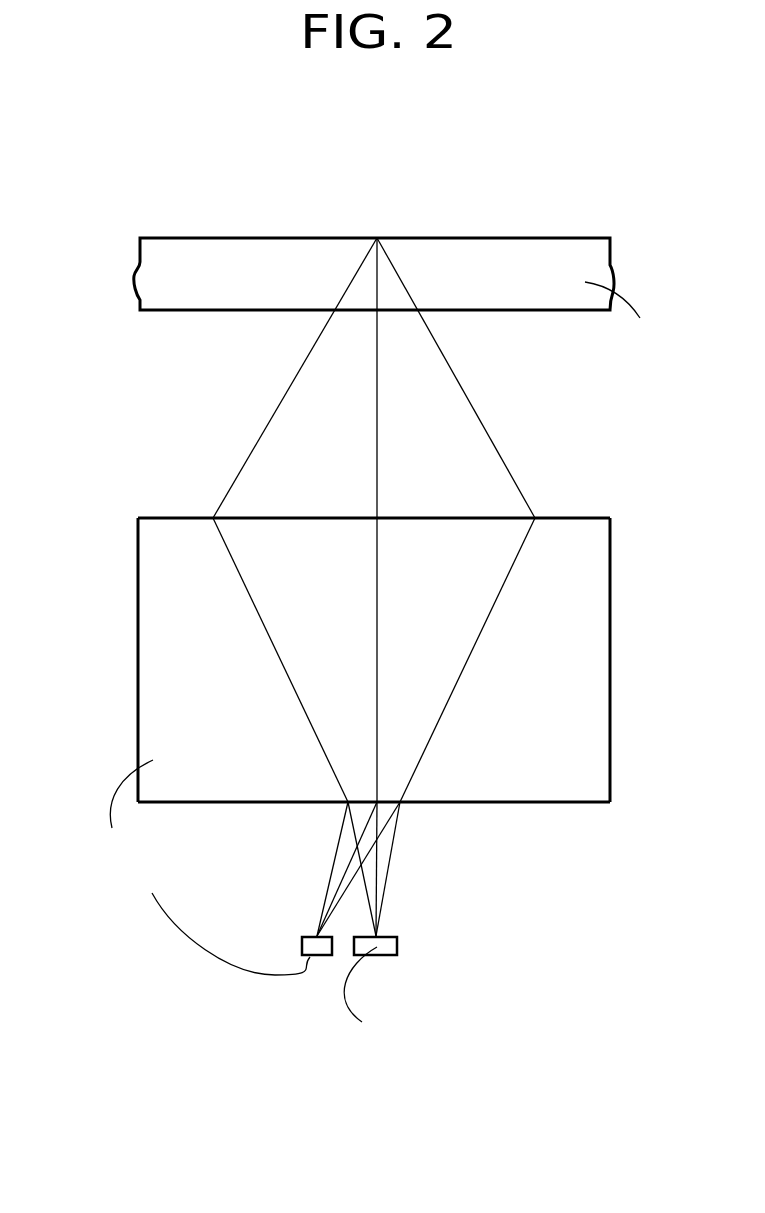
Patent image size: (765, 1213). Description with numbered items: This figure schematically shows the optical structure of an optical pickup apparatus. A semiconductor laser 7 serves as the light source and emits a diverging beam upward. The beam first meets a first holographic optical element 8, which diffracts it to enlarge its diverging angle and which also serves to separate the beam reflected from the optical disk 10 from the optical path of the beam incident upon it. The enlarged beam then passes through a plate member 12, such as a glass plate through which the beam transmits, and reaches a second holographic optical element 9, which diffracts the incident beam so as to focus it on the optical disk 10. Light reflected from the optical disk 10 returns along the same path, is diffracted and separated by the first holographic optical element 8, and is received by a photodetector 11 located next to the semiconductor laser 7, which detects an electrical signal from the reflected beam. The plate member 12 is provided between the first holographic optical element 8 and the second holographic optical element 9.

The semiconductor laser 7 is at (398, 945).
The first holographic optical element 8 is at (582, 803).
The second holographic optical element 9 is at (590, 517).
The optical disk 10 is at (553, 255).
The photodetector 11 is at (302, 947).
The plate member 12 is at (343, 665).